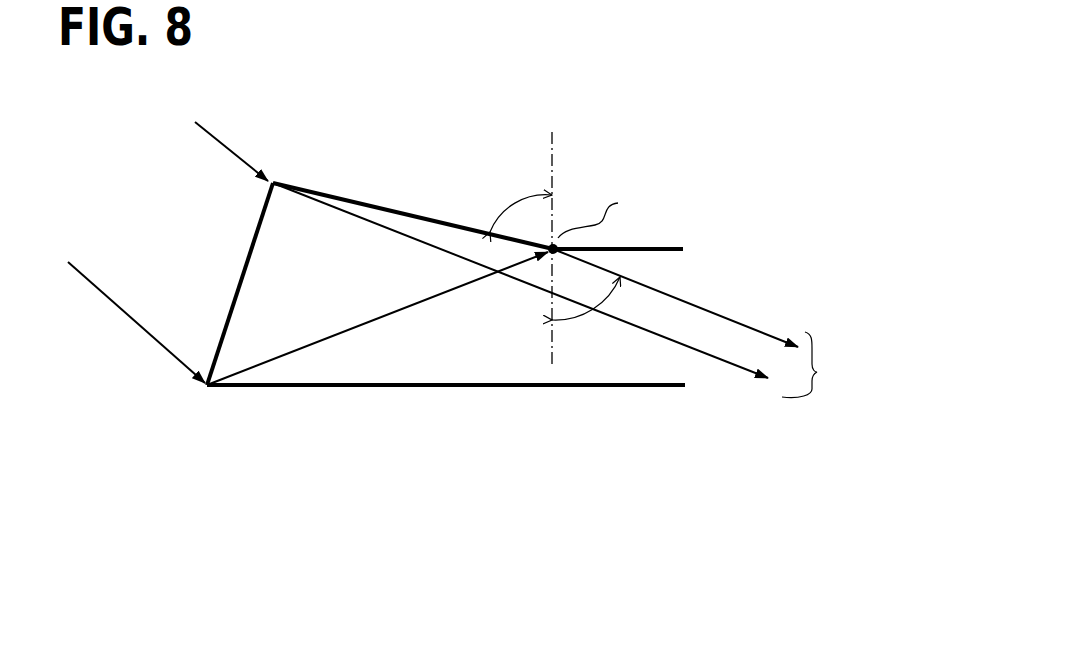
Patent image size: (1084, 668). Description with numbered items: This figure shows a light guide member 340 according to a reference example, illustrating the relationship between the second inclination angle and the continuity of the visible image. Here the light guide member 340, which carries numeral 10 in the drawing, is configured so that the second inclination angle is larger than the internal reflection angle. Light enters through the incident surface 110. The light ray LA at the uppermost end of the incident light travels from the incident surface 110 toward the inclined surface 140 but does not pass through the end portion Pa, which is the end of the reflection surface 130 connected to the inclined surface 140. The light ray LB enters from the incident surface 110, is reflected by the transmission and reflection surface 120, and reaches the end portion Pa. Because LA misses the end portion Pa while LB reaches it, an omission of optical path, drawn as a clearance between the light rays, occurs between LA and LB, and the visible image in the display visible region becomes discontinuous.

The optical element 10 is at (456, 299).
The incident surface 110 is at (223, 327).
The transmission and reflection surface 120 is at (348, 386).
The reflection surface 130 is at (633, 249).
The inclined surface 140 is at (353, 203).
The light guide member 340 is at (683, 200).